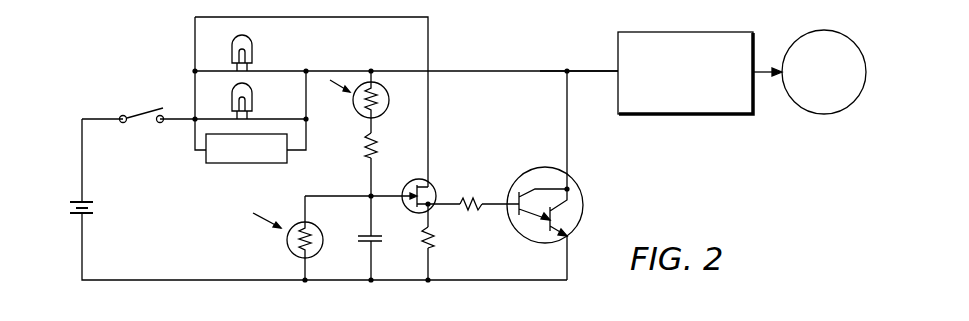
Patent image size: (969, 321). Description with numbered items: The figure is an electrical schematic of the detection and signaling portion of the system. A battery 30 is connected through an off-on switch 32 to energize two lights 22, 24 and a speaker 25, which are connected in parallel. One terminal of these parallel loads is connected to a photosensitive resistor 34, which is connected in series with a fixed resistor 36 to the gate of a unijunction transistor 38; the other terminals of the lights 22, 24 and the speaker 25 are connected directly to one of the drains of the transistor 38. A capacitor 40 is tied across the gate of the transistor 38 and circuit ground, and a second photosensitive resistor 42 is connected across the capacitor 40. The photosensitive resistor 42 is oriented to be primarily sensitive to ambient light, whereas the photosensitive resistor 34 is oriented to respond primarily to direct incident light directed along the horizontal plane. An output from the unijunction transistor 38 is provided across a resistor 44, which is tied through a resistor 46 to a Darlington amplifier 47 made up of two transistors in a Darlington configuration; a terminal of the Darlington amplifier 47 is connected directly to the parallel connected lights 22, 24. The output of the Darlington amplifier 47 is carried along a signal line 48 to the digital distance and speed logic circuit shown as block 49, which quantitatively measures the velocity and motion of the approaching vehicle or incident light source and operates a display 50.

The light 22 is at (253, 48).
The light 24 is at (253, 100).
The speaker 25 is at (232, 163).
The battery 30 is at (95, 200).
The off-on switch 32 is at (148, 108).
The photosensitive resistor 34 is at (388, 104).
The fixed resistor 36 is at (362, 146).
The unijunction transistor 38 is at (434, 185).
The capacitor 40 is at (376, 243).
The second photosensitive resistor 42 is at (296, 215).
The resistor 44 is at (434, 237).
The resistor 46 is at (472, 200).
The Darlington amplifier 47 is at (578, 190).
The signal line 48 is at (570, 70).
The digital distance and speed logic circuit 49 is at (713, 110).
The display 50 is at (828, 104).